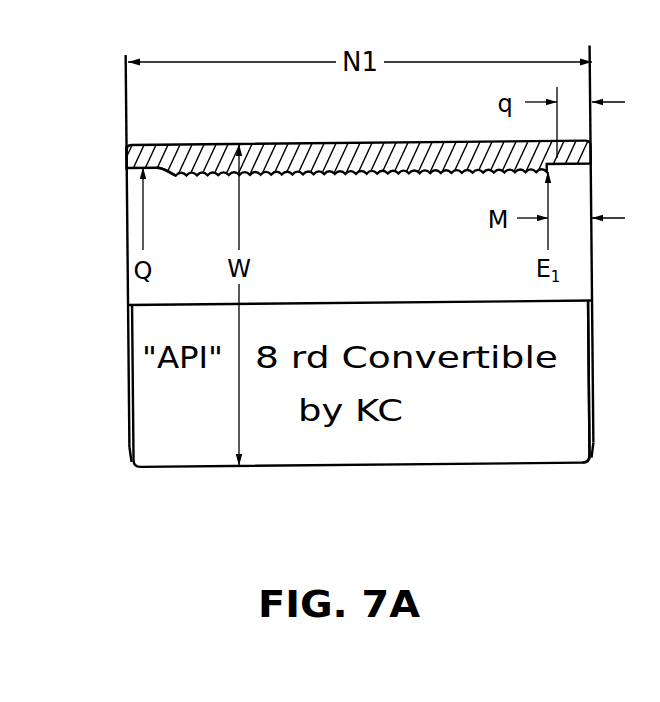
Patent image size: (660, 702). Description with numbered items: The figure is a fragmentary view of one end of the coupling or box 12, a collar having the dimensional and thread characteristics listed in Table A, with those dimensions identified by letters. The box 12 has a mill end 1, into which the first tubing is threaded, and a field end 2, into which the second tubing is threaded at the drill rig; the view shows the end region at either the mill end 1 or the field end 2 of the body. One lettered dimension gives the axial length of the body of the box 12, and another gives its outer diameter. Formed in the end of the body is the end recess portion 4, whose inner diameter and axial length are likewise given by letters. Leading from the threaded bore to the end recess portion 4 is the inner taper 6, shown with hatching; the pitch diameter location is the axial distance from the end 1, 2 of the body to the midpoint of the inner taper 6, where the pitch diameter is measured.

The mill end 1 is at (126, 447).
The field end 2 is at (593, 438).
The end recess portion 4 is at (126, 172).
The inner taper 6 is at (177, 176).
The coupling or box 12 is at (368, 143).